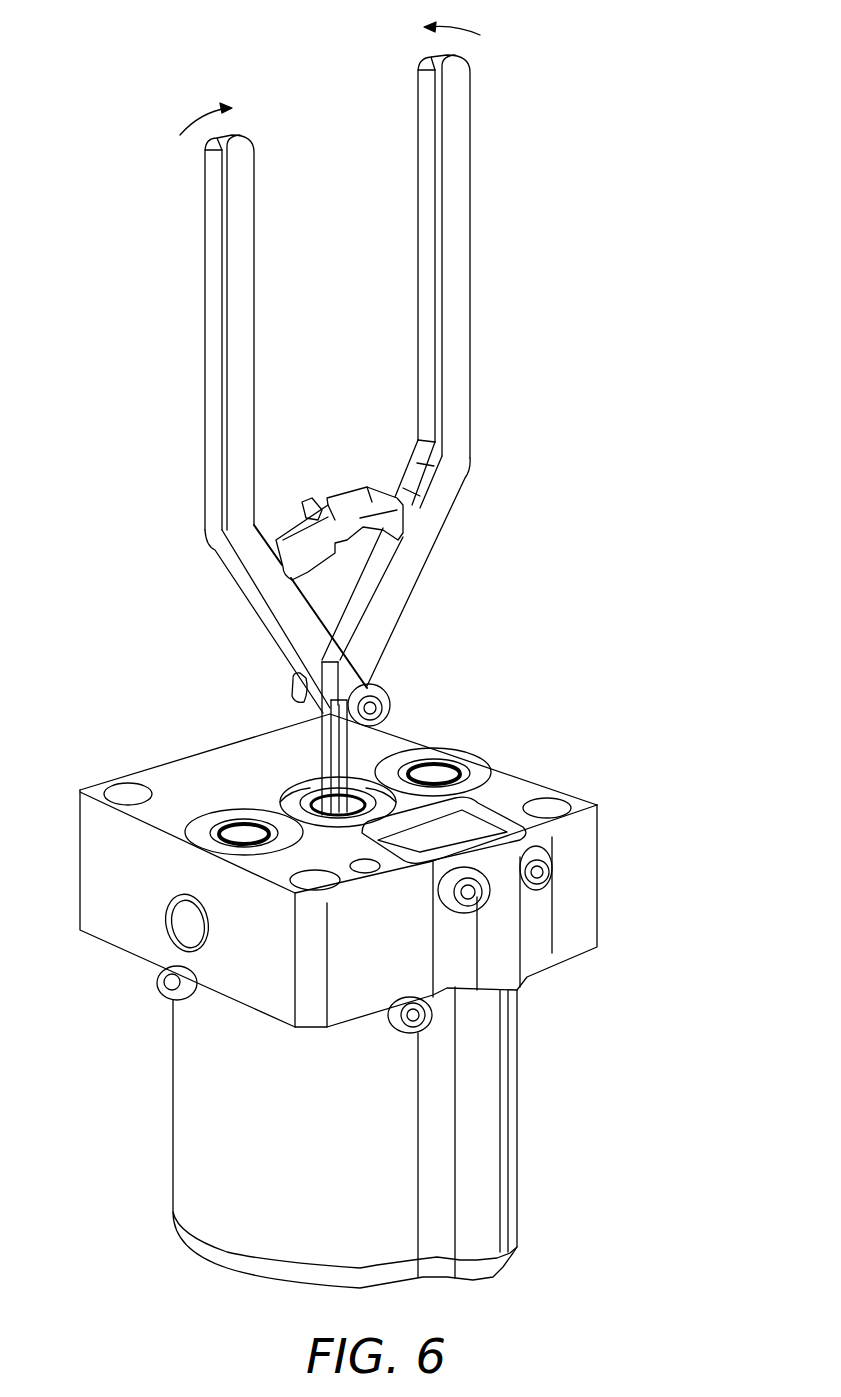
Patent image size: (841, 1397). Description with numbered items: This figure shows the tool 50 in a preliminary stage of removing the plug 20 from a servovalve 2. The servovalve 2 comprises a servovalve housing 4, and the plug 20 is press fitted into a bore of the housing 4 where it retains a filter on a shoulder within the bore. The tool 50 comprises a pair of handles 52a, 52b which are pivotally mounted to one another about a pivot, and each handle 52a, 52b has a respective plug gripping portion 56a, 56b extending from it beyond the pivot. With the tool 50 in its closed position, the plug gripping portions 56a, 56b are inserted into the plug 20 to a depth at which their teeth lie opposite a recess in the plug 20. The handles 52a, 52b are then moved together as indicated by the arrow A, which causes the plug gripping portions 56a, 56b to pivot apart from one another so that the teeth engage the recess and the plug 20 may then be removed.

The servovalve 2 is at (613, 886).
The servovalve housing 4 is at (536, 778).
The plug 20 is at (296, 790).
The tool 50 is at (510, 434).
The handle 52a is at (460, 200).
The handle 52b is at (232, 298).
The plug gripping portion 56a is at (347, 805).
The plug gripping portion 56b is at (330, 758).